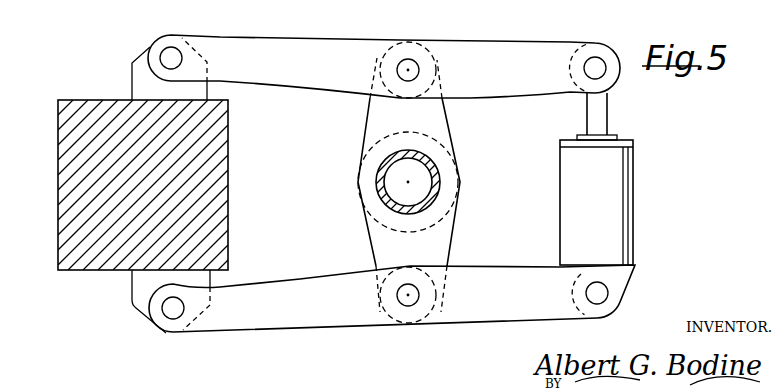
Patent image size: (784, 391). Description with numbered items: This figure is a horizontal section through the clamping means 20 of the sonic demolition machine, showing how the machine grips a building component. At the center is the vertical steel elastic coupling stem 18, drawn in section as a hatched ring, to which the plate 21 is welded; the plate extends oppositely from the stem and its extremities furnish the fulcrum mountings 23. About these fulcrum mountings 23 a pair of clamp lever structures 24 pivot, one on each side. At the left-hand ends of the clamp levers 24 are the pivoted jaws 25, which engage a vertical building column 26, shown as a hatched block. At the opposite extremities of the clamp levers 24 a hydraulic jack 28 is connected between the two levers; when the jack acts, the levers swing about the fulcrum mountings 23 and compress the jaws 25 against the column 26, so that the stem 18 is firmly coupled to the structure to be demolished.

The coupling stem 18 is at (432, 207).
The clamping means 20 is at (391, 199).
The plate 21 is at (440, 135).
The fulcrum mountings 23 is at (432, 56).
The clamp lever structures 24 is at (318, 44).
The pivoted jaws 25 is at (133, 73).
The column 26 is at (58, 111).
The hydraulic jack 28 is at (627, 160).